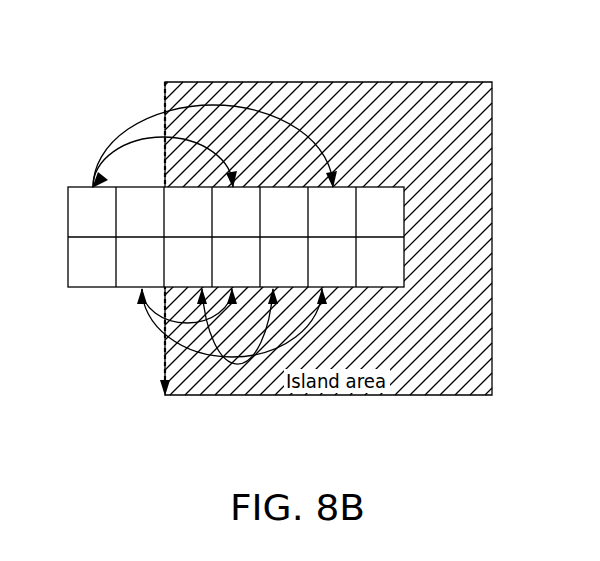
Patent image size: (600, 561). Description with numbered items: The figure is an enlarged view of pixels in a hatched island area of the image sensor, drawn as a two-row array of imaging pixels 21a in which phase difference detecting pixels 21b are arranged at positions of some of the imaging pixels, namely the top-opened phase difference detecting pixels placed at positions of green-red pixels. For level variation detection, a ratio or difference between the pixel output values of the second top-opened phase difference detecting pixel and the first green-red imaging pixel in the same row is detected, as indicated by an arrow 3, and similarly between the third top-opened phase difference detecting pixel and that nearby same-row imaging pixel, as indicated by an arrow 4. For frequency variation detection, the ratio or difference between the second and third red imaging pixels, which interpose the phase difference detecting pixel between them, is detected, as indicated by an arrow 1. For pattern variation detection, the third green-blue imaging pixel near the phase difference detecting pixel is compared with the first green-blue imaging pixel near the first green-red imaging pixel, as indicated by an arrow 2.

The arrow 1 is at (232, 380).
The arrow 2 is at (141, 121).
The arrow 3 is at (155, 321).
The arrow 4 is at (190, 355).
The imaging pixel 21a is at (95, 289).
The phase difference detecting pixel 21b is at (258, 237).